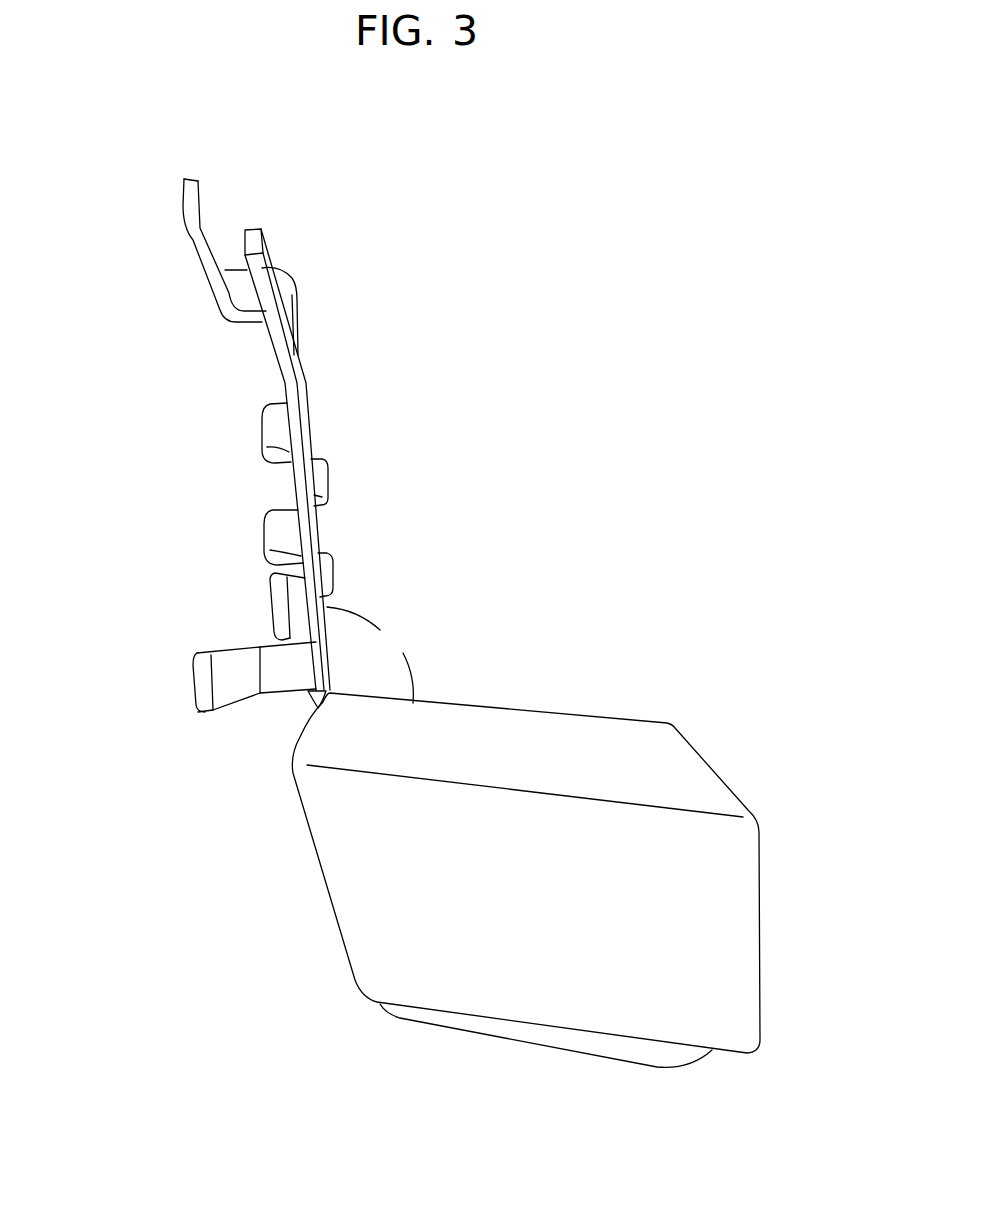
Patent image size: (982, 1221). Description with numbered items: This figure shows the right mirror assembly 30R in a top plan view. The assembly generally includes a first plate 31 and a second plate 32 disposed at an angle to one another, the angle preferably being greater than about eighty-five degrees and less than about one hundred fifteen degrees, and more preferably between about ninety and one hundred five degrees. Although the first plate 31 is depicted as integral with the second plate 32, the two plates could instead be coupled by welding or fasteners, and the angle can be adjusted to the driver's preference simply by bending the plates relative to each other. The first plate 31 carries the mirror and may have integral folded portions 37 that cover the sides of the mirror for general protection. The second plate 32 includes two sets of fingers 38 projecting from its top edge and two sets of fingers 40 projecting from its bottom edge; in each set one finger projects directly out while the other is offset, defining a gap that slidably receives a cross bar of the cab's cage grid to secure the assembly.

The right mirror assembly 30R is at (541, 340).
The first plate 31 is at (652, 768).
The second plate 32 is at (288, 386).
The integral folded portions 37 is at (727, 960).
The sets of fingers 38 is at (263, 287).
The sets of fingers 40 is at (268, 433).